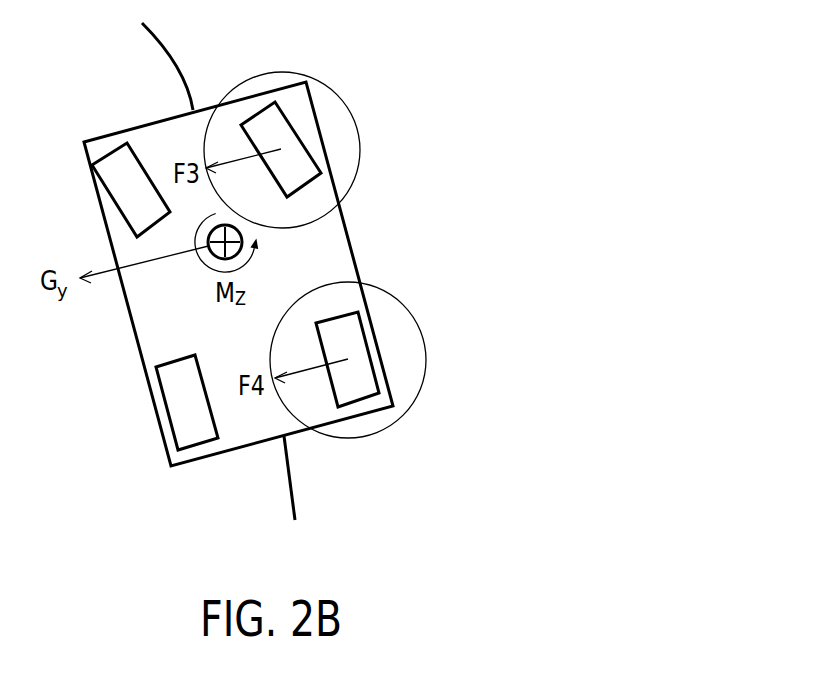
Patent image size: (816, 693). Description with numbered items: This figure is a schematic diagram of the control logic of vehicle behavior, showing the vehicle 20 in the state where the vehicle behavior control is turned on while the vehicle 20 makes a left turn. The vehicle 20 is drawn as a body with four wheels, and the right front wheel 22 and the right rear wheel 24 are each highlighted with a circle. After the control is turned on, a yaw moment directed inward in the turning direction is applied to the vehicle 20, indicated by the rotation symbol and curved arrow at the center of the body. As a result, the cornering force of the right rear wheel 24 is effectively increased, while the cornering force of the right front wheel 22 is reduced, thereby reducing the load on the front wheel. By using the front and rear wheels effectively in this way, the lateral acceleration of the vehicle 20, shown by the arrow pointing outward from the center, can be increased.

The vehicle 20 is at (351, 242).
The right front wheel 22 is at (299, 139).
The right rear wheel 24 is at (371, 351).